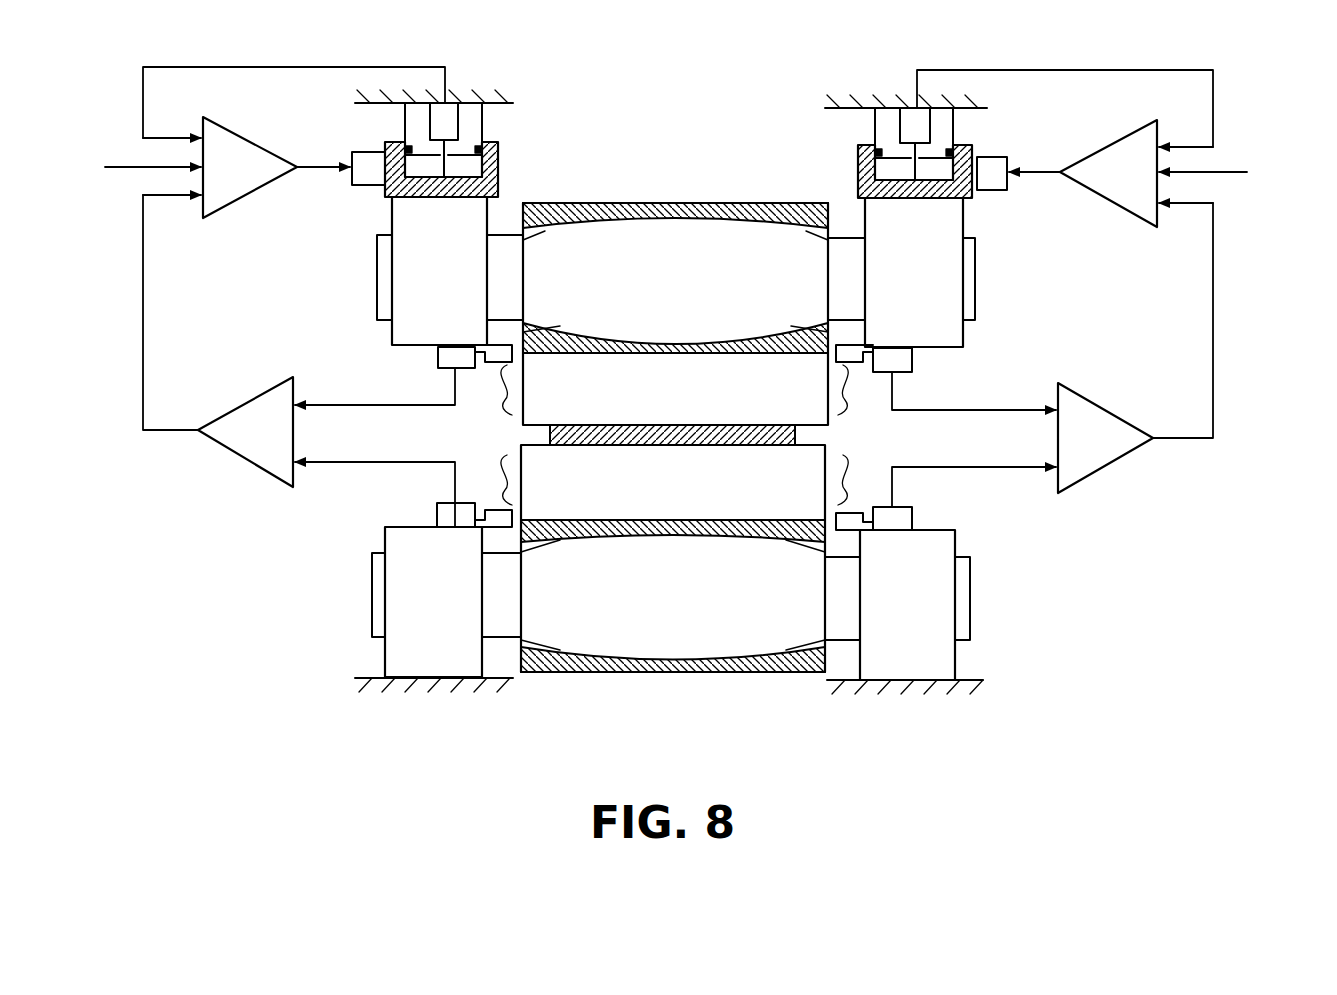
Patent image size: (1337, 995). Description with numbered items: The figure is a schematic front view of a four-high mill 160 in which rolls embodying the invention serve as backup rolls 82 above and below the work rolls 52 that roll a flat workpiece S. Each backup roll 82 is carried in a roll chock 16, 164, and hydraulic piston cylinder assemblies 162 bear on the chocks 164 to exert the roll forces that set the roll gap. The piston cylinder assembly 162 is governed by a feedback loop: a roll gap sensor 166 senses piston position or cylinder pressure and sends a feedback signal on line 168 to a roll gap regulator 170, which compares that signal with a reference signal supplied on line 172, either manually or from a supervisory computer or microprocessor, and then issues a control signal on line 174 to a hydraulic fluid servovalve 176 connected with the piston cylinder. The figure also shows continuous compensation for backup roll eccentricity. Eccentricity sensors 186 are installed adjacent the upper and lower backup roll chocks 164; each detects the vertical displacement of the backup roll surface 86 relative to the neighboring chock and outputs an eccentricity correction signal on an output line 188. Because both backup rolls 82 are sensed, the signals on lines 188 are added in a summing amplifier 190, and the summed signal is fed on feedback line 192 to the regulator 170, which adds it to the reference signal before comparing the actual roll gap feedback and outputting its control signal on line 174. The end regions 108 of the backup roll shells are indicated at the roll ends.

The bearing chock 16 is at (858, 158).
The roll 52 is at (685, 405).
The backup roll 82 is at (637, 203).
The backup roll surface 86 is at (705, 203).
The shell end ring 108 is at (523, 232).
The four-high mill 160 is at (672, 186).
The hydraulic piston cylinder assembly 162 is at (397, 124).
The roll chock 164 is at (390, 222).
The roll gap sensor 166 is at (920, 129).
The feed back signal line 168 is at (1158, 70).
The roll gap regulator 170 is at (1123, 138).
The reference signal line 172 is at (1230, 170).
The control signal line 174 is at (1047, 177).
The hydraulic fluid servovalve 176 is at (990, 182).
The backup roll eccentricity sensor 186 is at (432, 362).
The eccentricity sensor output line 188 is at (343, 458).
The summing amplifier 190 is at (248, 398).
The feed back line 192 is at (168, 432).
The flat workpiece S is at (800, 437).